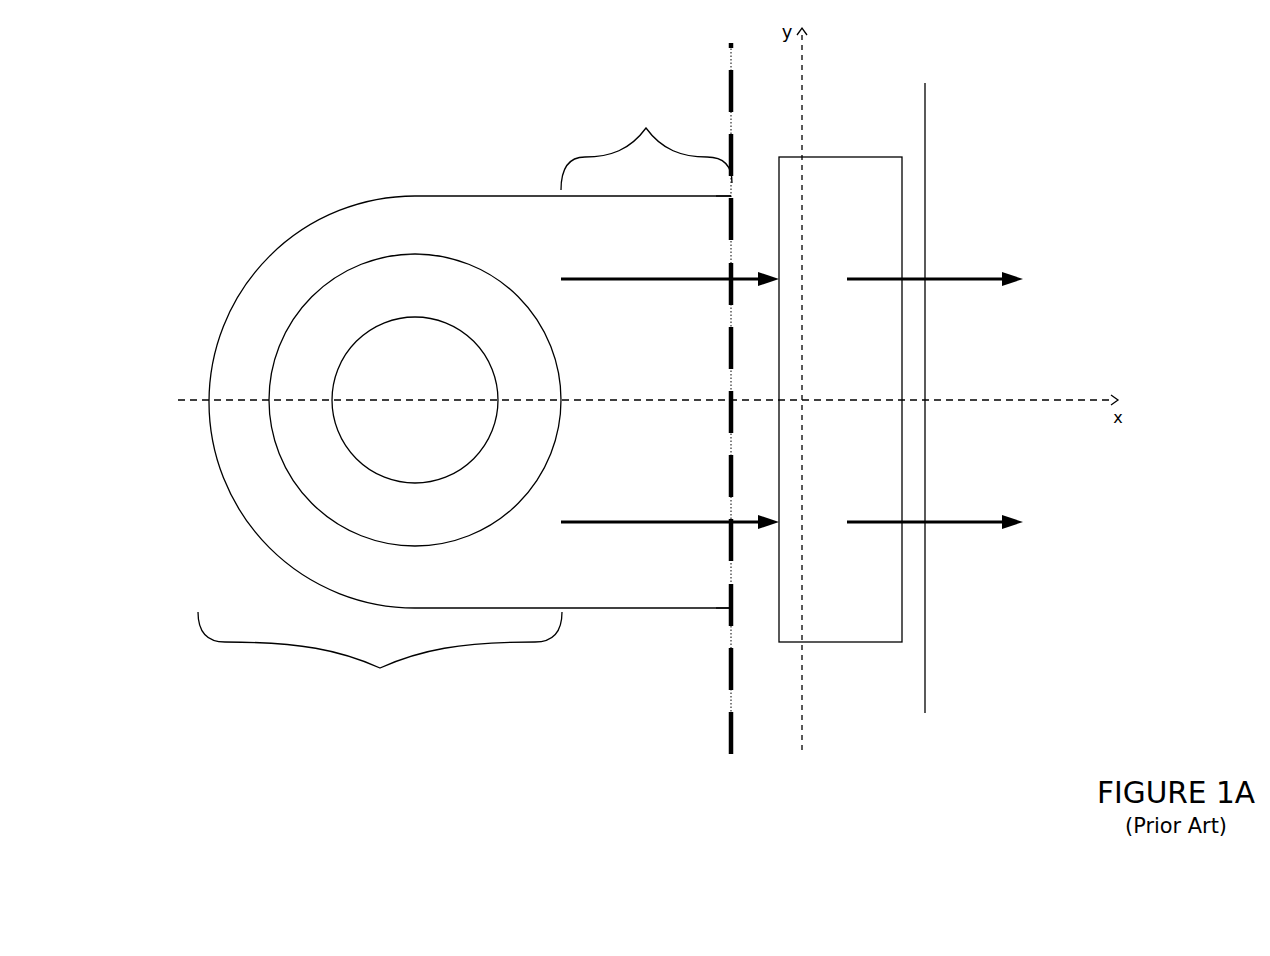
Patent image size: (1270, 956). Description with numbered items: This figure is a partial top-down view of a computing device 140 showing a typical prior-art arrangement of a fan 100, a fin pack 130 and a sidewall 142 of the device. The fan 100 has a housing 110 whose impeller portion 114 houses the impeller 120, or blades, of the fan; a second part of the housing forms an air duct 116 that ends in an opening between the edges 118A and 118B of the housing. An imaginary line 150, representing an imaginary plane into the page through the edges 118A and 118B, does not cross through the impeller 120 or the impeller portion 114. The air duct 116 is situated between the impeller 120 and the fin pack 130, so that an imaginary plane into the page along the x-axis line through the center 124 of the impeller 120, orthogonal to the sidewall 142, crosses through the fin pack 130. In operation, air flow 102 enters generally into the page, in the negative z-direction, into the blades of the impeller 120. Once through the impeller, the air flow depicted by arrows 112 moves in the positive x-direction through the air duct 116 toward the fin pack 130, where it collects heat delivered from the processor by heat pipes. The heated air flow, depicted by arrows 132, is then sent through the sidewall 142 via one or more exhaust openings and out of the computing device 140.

The fan 100 is at (296, 227).
The air flow 102 is at (344, 297).
The housing 110 is at (532, 196).
The air flow arrows 112 is at (610, 279).
The impeller portion 114 is at (380, 656).
The air duct 116 is at (646, 146).
The edge of the housing 118A is at (731, 608).
The edge of the housing 118B is at (731, 205).
The impeller 120 is at (552, 455).
The center of the impeller 124 is at (413, 398).
The fin pack 130 is at (902, 380).
The heated air flow arrows 132 is at (950, 279).
The computing device 140 is at (1080, 258).
The sidewall 142 is at (927, 157).
The imaginary line 150 is at (731, 727).